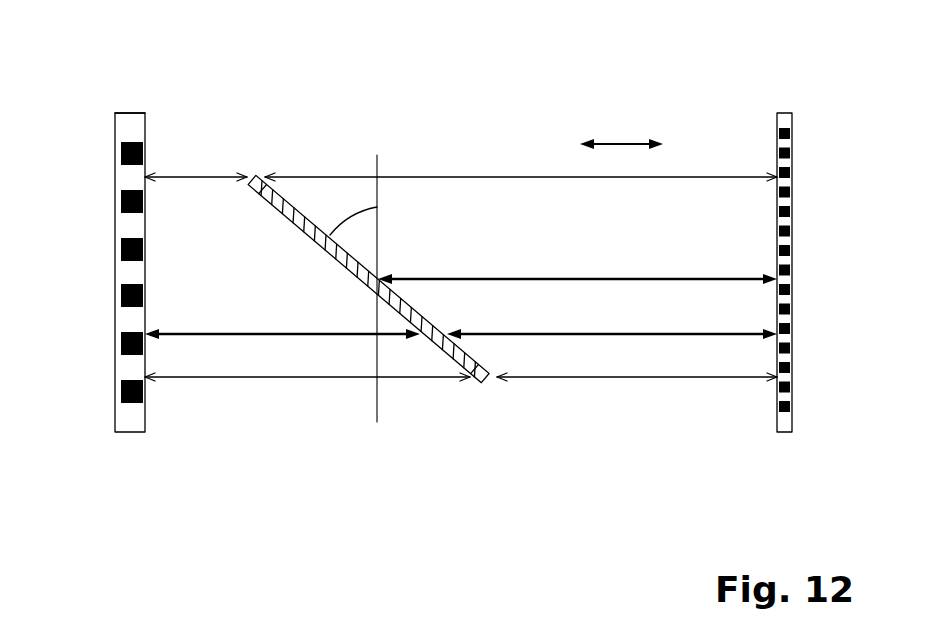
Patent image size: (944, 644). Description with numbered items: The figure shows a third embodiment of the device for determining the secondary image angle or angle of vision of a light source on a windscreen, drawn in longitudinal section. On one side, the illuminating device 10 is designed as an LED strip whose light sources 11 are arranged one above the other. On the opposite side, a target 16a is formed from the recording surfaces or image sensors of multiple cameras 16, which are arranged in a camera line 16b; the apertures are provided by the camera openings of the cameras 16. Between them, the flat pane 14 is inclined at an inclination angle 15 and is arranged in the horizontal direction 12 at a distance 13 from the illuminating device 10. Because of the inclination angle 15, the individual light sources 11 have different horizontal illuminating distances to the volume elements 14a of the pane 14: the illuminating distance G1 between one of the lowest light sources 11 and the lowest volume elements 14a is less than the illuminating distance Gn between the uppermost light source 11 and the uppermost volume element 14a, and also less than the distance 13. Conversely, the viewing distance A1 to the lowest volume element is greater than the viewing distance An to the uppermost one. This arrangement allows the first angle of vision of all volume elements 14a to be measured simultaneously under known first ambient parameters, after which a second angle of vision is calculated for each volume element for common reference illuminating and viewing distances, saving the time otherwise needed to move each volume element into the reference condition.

The illuminating device 10 is at (784, 90).
The light sources 11 is at (777, 153).
The horizontal direction 12 is at (630, 142).
The distance 13 is at (450, 277).
The flat pane 14 is at (437, 347).
The volume elements 14a is at (250, 180).
The inclination angle 15 is at (377, 207).
The cameras 16 is at (123, 350).
The target 16a is at (143, 246).
The camera line 16b is at (134, 96).
The viewing distance An is at (210, 177).
The viewing distance A1 is at (232, 378).
The illuminating distance Gn is at (533, 177).
The illuminating distance G1 is at (702, 378).